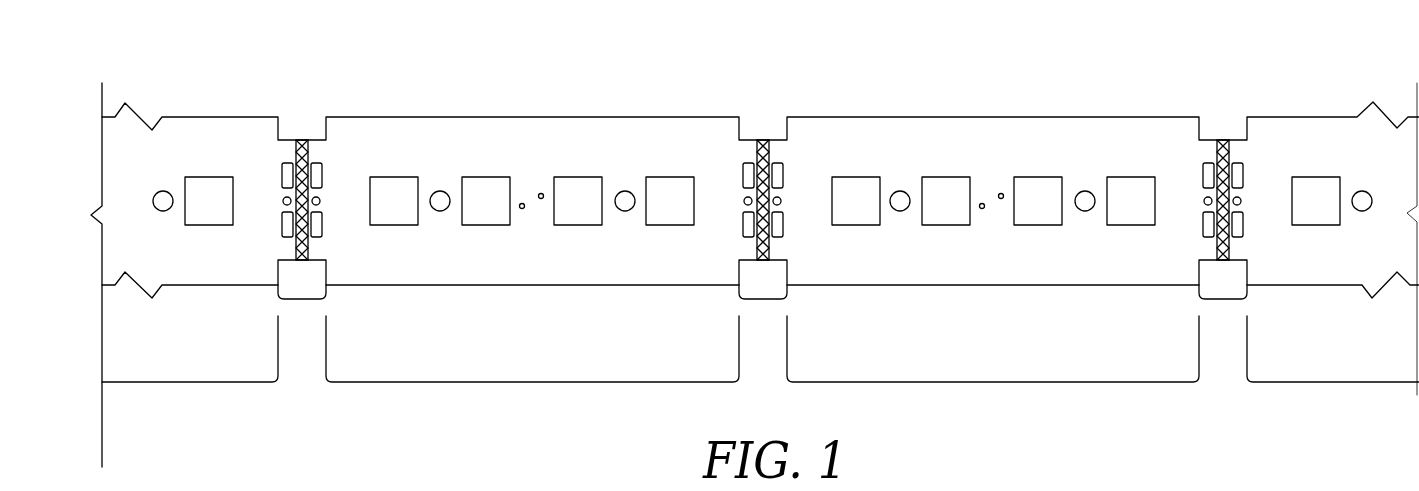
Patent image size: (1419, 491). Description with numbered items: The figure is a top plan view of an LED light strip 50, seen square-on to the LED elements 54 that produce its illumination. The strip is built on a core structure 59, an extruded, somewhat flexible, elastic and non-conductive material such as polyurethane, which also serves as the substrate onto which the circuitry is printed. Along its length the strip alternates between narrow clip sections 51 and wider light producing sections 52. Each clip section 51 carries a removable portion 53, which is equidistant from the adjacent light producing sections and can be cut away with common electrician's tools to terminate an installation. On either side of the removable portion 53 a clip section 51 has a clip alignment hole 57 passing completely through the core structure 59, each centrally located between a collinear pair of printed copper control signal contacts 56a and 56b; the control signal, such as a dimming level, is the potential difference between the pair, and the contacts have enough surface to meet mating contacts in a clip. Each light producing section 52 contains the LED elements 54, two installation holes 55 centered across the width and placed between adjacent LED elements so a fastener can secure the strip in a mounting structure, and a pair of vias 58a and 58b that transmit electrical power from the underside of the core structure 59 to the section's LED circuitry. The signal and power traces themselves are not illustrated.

The LED light strip 50 is at (196, 446).
The clip section 51 is at (303, 299).
The light producing section 52 is at (143, 383).
The removable portion 53 is at (305, 163).
The LED element 54 is at (199, 190).
The installation hole 55 is at (164, 191).
The control signal contact 56a is at (283, 220).
The control signal contact 56b is at (282, 177).
The clip alignment hole 57 is at (287, 201).
The via 58a is at (522, 209).
The via 58b is at (541, 199).
The core structure 59 is at (683, 140).